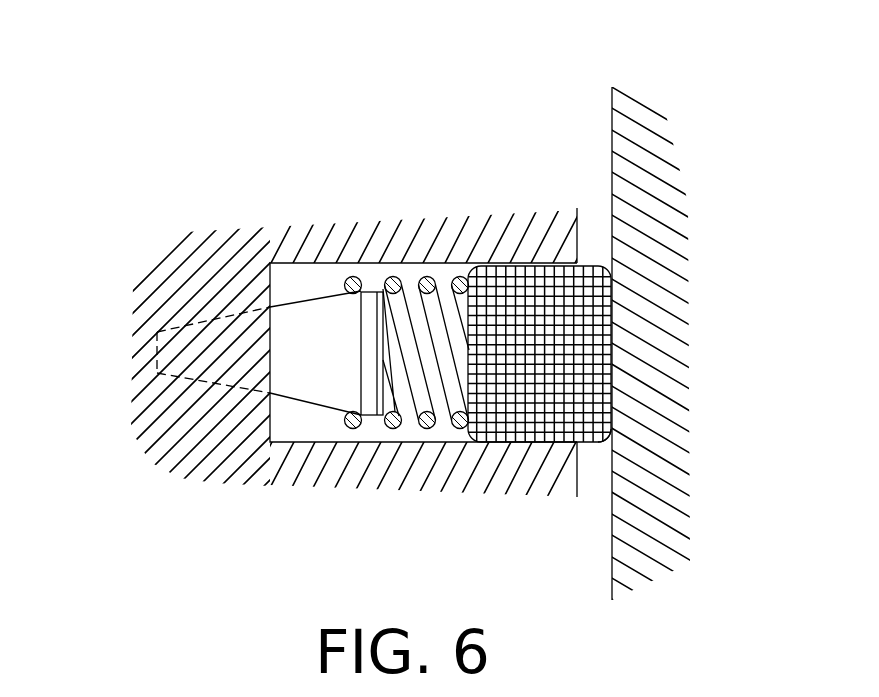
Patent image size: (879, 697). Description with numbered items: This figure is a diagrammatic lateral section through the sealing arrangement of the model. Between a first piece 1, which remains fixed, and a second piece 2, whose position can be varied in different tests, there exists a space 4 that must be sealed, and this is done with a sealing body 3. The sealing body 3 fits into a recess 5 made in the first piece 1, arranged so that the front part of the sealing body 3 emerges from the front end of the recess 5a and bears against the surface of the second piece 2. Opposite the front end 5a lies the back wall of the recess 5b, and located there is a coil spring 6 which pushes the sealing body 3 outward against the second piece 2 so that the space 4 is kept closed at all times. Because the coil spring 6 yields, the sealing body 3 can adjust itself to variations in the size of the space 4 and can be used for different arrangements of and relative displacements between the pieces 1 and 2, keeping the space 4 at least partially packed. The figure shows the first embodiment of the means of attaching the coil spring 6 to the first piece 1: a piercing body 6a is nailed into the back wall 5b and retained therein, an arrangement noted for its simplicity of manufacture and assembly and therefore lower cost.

The first piece 1 is at (207, 432).
The second piece 2 is at (647, 343).
The sealing body 3 is at (543, 387).
The space to seal 4 is at (593, 218).
The recess 5 is at (375, 428).
The front end of the recess 5a is at (583, 445).
The back wall of the recess 5b is at (270, 403).
The coil spring 6 is at (426, 283).
The piercing body 6a is at (323, 332).